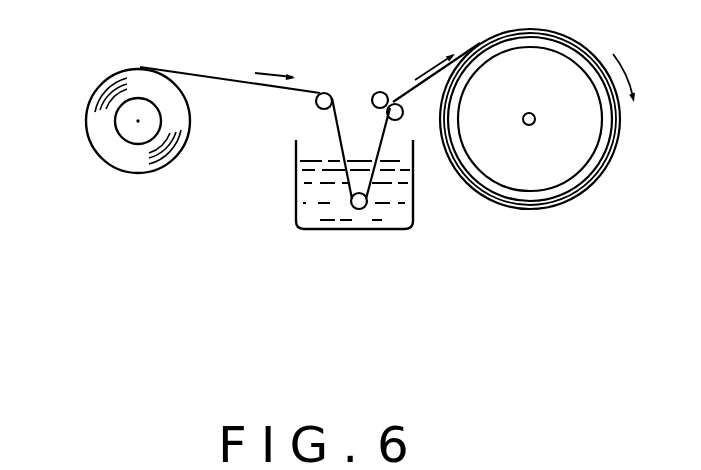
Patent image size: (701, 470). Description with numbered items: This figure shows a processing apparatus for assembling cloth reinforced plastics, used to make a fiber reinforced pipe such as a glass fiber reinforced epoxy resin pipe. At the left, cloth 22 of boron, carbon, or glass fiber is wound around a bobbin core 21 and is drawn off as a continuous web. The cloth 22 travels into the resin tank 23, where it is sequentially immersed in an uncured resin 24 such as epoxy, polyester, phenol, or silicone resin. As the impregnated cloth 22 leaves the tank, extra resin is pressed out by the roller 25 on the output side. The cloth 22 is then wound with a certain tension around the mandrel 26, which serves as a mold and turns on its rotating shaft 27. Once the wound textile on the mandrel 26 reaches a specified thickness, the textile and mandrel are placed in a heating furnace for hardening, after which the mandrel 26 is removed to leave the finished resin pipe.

The bobbin core 21 is at (138, 136).
The cloth 22 is at (92, 131).
The resin tank 23 is at (351, 232).
The uncured resin 24 is at (398, 213).
The roller 25 is at (381, 90).
The mandrel 26 is at (558, 170).
The rotating shaft 27 is at (535, 119).